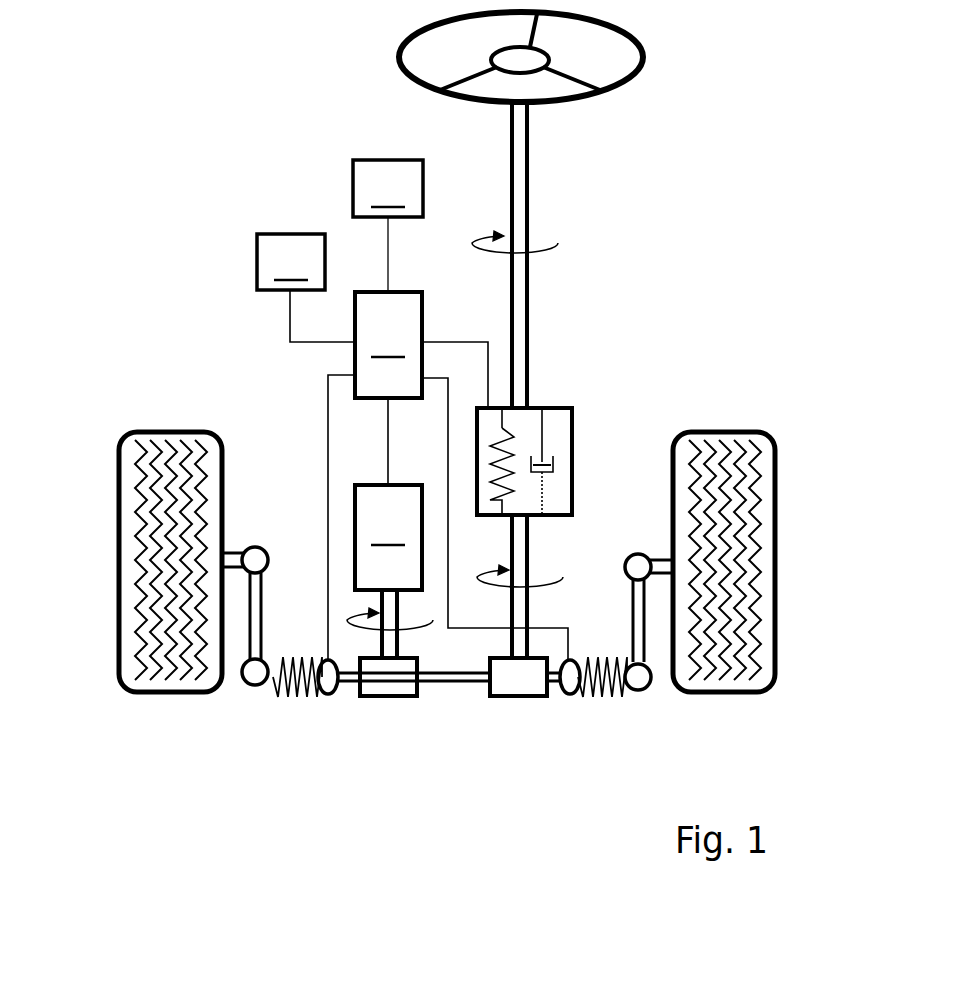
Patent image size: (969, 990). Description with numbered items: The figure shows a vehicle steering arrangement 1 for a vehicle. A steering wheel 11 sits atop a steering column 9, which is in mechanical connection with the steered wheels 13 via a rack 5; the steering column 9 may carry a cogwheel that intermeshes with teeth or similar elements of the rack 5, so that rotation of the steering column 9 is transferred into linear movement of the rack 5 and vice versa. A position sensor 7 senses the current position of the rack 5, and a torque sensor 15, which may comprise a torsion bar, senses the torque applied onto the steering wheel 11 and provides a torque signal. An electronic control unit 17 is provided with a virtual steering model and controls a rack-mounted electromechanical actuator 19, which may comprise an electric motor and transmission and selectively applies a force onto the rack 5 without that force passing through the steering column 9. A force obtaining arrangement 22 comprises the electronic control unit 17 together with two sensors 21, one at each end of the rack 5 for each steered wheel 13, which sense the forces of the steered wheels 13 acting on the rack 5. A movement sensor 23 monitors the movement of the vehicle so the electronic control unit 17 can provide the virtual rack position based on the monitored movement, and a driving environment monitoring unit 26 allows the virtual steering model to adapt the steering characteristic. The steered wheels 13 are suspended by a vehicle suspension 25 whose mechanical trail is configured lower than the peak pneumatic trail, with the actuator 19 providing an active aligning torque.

The vehicle steering arrangement 1 is at (265, 161).
The rack 5 is at (473, 677).
The position sensor 7 is at (420, 697).
The steering column 9 is at (520, 291).
The steering wheel 11 is at (617, 88).
The steered wheels 13 is at (183, 435).
The torque sensor 15 is at (556, 443).
The electronic control unit 17 is at (448, 476).
The rack-mounted electromechanical actuator 19 is at (390, 571).
The sensors 21 is at (330, 692).
The force obtaining arrangement 22 is at (273, 392).
The movement sensor 23 is at (388, 226).
The vehicle suspension 25 is at (288, 558).
The driving environment monitoring unit 26 is at (306, 288).